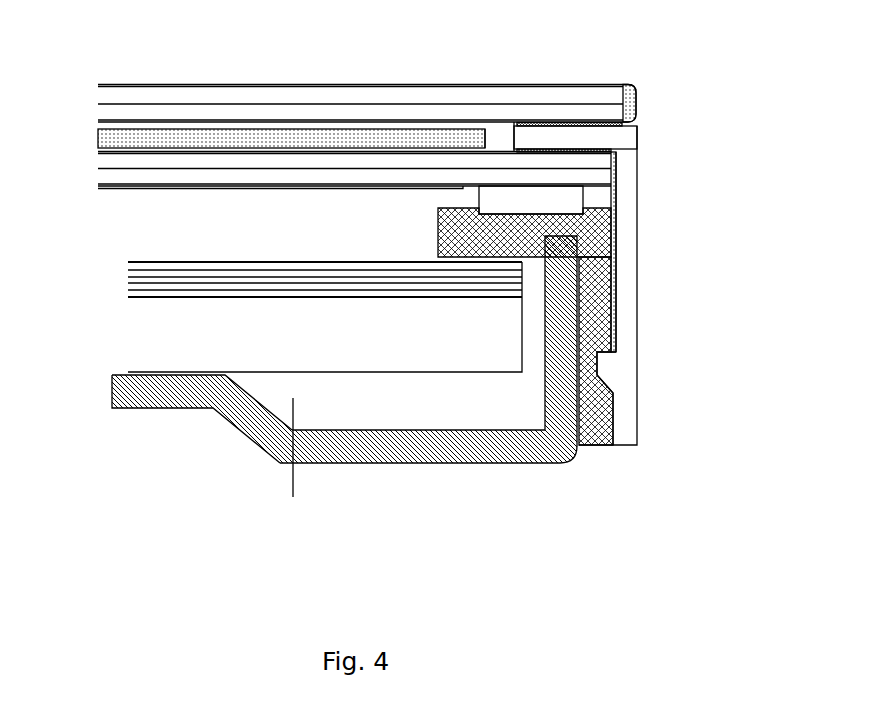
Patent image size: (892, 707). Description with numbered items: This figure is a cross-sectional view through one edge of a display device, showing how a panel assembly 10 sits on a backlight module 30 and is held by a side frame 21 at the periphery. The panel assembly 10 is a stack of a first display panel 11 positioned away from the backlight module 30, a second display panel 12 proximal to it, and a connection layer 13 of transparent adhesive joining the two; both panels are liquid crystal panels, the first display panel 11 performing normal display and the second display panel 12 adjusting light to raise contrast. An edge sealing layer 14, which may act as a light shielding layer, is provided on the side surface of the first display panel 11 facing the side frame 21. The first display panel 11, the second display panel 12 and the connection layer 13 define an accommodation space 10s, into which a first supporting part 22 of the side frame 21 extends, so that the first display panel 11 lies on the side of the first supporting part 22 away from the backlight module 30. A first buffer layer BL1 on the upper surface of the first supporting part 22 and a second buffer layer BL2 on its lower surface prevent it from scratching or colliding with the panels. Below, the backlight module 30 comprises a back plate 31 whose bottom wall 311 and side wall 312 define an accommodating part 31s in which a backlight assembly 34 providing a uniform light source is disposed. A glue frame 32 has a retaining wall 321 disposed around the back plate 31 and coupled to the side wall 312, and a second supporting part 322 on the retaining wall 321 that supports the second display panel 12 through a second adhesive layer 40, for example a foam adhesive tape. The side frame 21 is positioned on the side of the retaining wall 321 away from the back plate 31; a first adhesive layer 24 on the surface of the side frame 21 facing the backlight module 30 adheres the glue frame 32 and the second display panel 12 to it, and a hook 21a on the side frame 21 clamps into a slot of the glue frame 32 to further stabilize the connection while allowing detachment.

The panel assembly 10 is at (37, 92).
The first display panel 11 is at (97, 85).
The second display panel 12 is at (97, 151).
The connection layer 13 is at (112, 135).
The edge sealing layer 14 is at (630, 97).
The accommodation space 10s is at (500, 138).
The first buffer layer BL1 is at (605, 120).
The first supporting part 22 is at (588, 135).
The second buffer layer BL2 is at (617, 152).
The side frame 21 is at (625, 188).
The first adhesive layer 24 is at (613, 203).
The hook 21a is at (602, 362).
The second adhesive layer 40 is at (500, 205).
The backlight module 30 is at (582, 565).
The back plate 31 is at (498, 533).
The bottom wall 311 is at (383, 450).
The side wall 312 is at (553, 387).
The accommodating part 31s is at (295, 463).
The glue frame 32 is at (708, 265).
The retaining wall 321 is at (593, 328).
The second supporting part 322 is at (512, 243).
The backlight assembly 34 is at (327, 380).